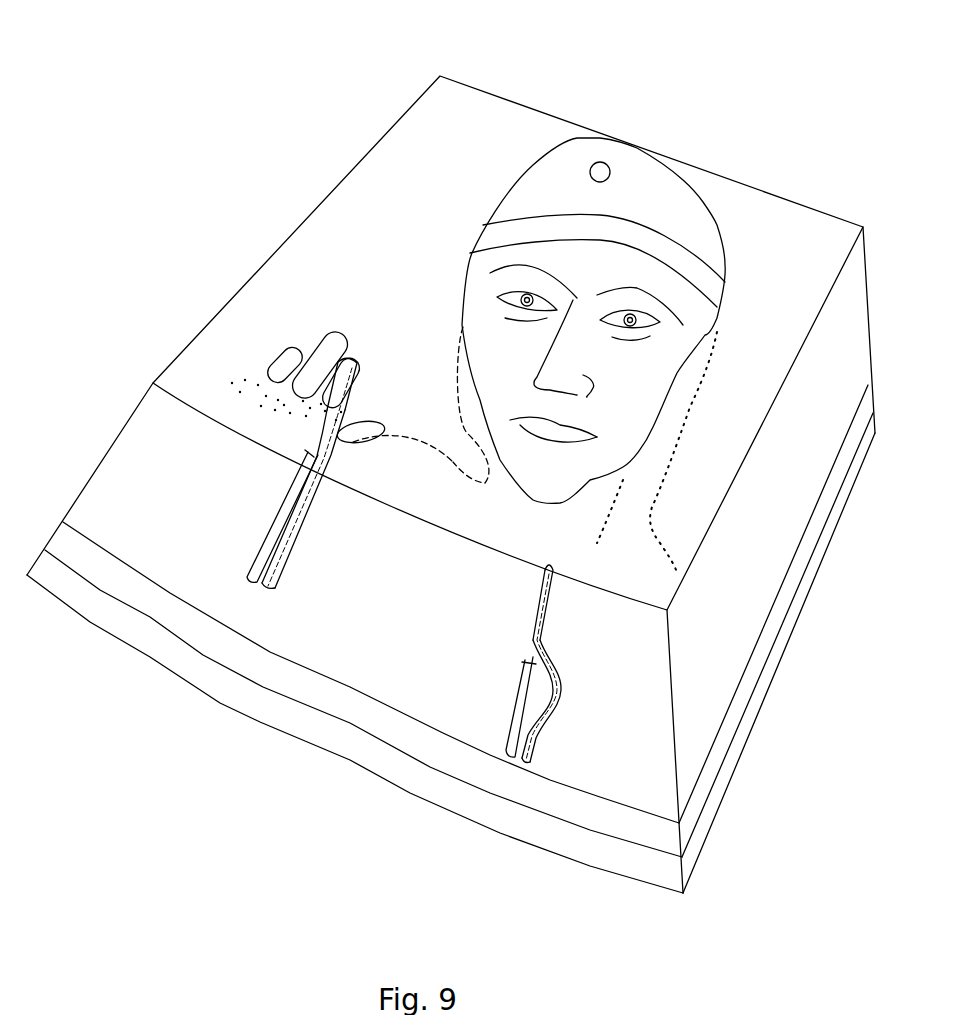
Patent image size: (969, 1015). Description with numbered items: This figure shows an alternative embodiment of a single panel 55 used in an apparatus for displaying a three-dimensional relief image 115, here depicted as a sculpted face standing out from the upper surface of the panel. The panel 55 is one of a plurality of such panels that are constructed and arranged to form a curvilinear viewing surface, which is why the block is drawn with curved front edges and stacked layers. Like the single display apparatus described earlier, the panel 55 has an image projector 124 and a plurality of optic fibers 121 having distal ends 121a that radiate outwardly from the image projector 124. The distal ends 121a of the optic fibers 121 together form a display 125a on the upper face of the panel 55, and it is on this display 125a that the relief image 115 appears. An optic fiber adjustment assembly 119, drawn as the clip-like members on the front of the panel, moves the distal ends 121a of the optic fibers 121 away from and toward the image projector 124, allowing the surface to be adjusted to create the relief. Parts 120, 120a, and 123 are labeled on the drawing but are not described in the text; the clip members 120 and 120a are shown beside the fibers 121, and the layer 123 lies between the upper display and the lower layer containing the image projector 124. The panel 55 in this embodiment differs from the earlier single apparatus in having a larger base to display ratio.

The panel 55 is at (660, 137).
The three-dimensional relief image 115 is at (483, 360).
The optic fiber adjustment assembly 119 is at (232, 565).
The clip leg 120 is at (310, 453).
The clip leg 120a is at (330, 382).
The optic fibers 121 is at (276, 583).
The distal ends 121a is at (430, 140).
The panel layer 123 is at (203, 653).
The image projector 124 is at (220, 703).
The display 125a is at (377, 210).